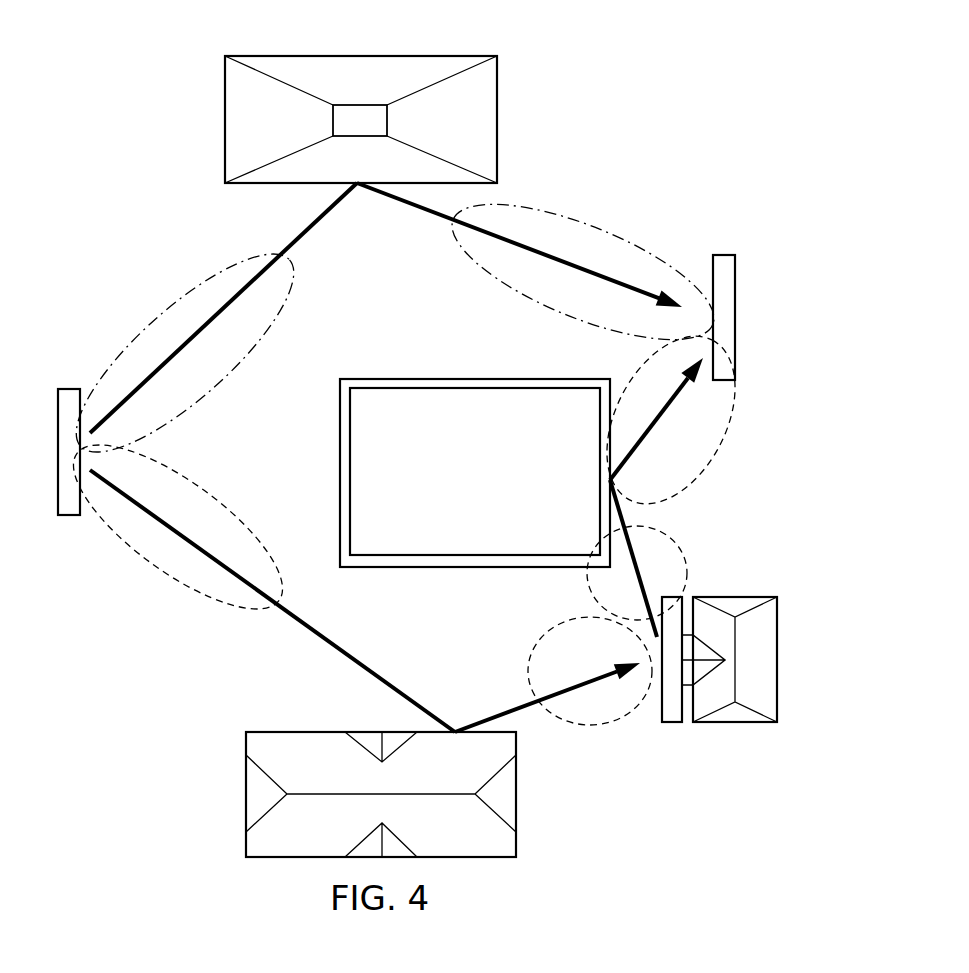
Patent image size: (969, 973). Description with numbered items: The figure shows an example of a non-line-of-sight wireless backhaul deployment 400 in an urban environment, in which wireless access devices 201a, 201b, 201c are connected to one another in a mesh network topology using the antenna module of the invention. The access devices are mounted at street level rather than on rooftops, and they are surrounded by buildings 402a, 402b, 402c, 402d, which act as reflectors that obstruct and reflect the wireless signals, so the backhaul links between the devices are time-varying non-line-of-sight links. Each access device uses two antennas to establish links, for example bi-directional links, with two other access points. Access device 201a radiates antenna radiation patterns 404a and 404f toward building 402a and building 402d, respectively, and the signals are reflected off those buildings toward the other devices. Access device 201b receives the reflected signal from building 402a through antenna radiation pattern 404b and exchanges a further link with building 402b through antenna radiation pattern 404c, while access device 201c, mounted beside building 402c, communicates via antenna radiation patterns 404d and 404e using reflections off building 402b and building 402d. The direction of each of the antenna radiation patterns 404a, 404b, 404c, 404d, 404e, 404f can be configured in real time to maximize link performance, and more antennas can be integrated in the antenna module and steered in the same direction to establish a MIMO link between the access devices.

The environment / system overview 400 is at (649, 80).
The building 402a is at (225, 121).
The building 402b is at (500, 503).
The building 402c is at (734, 725).
The building 402d is at (246, 815).
The wireless access device 201a is at (66, 517).
The wireless access device 201b is at (725, 252).
The wireless access device 201c is at (670, 726).
The antenna radiation pattern 404a is at (138, 323).
The antenna radiation pattern 404b is at (622, 232).
The antenna radiation pattern 404c is at (734, 413).
The antenna radiation pattern 404d is at (683, 552).
The antenna radiation pattern 404e is at (580, 727).
The antenna radiation pattern 404f is at (160, 577).